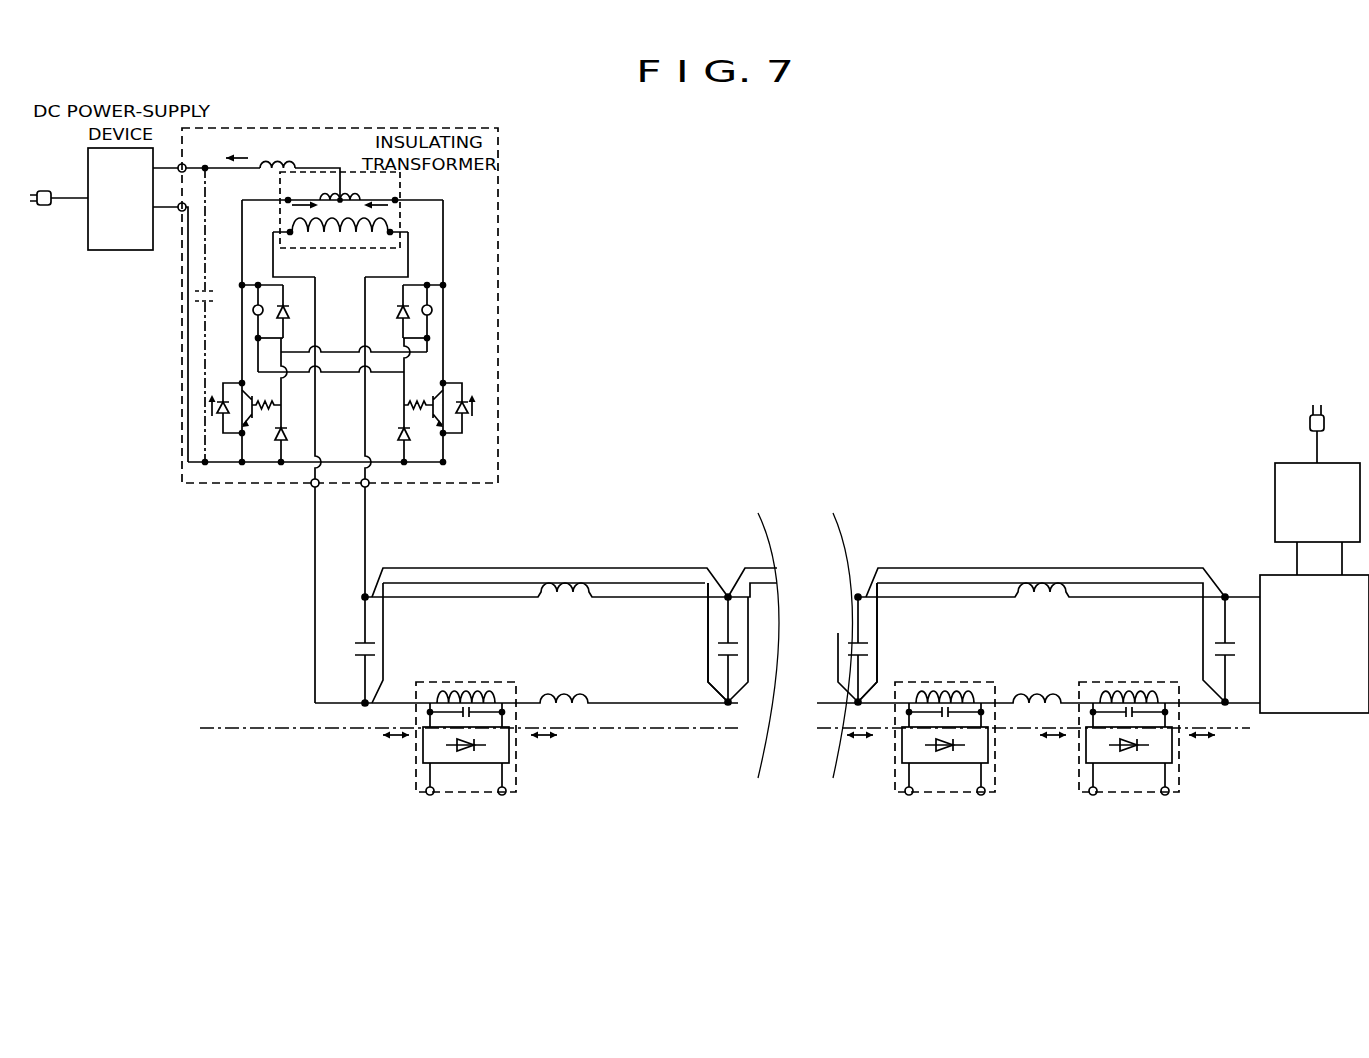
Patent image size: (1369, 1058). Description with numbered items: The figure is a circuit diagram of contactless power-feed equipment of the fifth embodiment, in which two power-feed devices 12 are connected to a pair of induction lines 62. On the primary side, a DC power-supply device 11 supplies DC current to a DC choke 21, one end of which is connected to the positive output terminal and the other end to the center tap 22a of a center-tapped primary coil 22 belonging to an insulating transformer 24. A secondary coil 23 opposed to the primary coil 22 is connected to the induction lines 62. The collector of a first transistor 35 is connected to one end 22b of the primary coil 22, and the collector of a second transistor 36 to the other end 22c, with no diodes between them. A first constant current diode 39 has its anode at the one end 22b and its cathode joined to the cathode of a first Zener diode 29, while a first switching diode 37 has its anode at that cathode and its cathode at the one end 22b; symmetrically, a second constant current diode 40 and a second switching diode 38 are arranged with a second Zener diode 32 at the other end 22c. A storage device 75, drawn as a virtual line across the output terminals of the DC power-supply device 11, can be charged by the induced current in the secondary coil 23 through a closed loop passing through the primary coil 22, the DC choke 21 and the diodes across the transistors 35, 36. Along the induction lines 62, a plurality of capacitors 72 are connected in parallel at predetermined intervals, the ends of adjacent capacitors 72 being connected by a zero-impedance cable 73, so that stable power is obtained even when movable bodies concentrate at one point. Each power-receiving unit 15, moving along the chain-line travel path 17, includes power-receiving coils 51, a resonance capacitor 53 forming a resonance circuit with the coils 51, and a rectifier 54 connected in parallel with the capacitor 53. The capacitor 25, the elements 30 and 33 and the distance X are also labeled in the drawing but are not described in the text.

The DC power-supply device 11 is at (120, 252).
The power-feed device 12 is at (500, 136).
The power-receiving unit 15 is at (412, 762).
The travel path 17 is at (580, 740).
The DC choke 21 is at (272, 158).
The center-tapped primary coil 22 is at (356, 195).
The center tap 22a is at (341, 192).
The one end of center-tapped primary coil 22b is at (288, 199).
The other end of center-tapped primary coil 22c is at (394, 201).
The secondary coil 23 is at (296, 225).
The insulating transformer 24 is at (405, 193).
The resonance capacitor 25 is at (357, 645).
The first Zener diode 29 is at (402, 431).
The resistor 30 is at (413, 411).
The second Zener diode 32 is at (284, 433).
The resistor 33 is at (274, 411).
The first transistor 35 is at (253, 398).
The second transistor 36 is at (432, 399).
The first switching diode 37 is at (287, 311).
The second switching diode 38 is at (401, 311).
The first constant current diode 39 is at (253, 311).
The second constant current diode 40 is at (432, 311).
The power-receiving coils 51 is at (435, 693).
The resonance capacitor 53 is at (436, 711).
The rectifier 54 is at (511, 746).
The induction lines 62 is at (694, 700).
The capacitors 72 is at (718, 650).
The zero-impedance cable 73 is at (611, 583).
The storage device 75 is at (194, 296).
The gap distance X is at (398, 742).